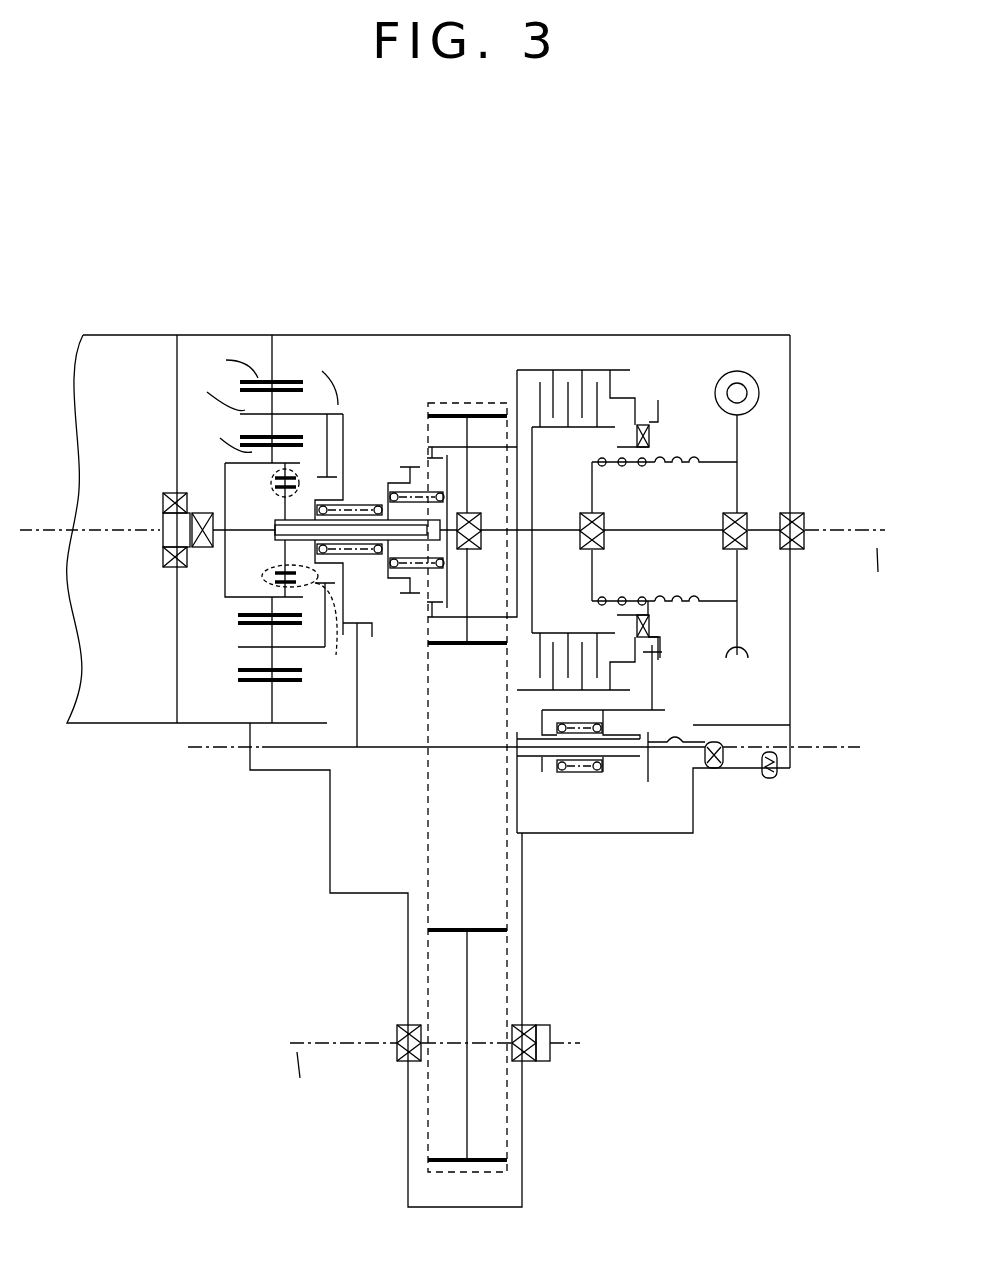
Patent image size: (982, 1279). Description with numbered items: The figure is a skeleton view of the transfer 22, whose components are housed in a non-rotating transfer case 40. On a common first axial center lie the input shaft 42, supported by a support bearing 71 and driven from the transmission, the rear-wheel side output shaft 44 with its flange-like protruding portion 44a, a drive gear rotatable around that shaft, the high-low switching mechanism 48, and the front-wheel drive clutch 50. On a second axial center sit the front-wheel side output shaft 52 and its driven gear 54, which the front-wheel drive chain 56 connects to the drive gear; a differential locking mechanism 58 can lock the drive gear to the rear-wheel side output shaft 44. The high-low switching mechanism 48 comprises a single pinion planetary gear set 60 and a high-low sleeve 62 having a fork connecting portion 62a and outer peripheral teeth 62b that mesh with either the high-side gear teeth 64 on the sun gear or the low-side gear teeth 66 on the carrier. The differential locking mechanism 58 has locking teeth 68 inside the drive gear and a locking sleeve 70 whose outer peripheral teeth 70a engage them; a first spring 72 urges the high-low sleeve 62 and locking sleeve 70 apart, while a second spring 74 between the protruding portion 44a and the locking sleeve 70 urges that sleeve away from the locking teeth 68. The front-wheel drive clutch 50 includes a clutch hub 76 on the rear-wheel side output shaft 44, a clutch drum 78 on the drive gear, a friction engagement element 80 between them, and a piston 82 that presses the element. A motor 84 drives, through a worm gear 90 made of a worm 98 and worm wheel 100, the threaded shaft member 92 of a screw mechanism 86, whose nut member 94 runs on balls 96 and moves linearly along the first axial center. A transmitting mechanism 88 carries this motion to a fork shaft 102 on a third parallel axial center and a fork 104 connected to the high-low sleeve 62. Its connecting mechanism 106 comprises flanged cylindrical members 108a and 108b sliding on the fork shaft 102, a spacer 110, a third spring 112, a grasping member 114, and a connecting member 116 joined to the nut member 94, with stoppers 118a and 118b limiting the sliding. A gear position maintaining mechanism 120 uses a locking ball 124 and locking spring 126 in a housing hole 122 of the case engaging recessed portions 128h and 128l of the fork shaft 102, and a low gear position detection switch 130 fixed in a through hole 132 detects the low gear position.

The transfer 22 is at (724, 196).
The transfer case 40 is at (190, 335).
The input shaft 42 is at (120, 530).
The rear-wheel side output shaft 44 is at (812, 530).
The protruding portion 44a is at (448, 462).
The high-low switching mechanism 48 is at (333, 264).
The front-wheel drive clutch 50 is at (568, 362).
The front-wheel side output shaft 52 is at (353, 1043).
The driven gear 54 is at (455, 932).
The front-wheel drive chain 56 is at (427, 1123).
The differential locking mechanism 58 is at (409, 412).
The planetary gear set 60 is at (272, 332).
The high-low sleeve 62 is at (346, 395).
The fork connecting portion 62a is at (338, 452).
The outer peripheral teeth 62b is at (277, 487).
The high-side gear teeth 64 is at (277, 469).
The low-side gear teeth 66 is at (331, 592).
The locking teeth 68 is at (432, 463).
The locking sleeve 70 is at (392, 483).
The outer peripheral teeth 70a is at (407, 462).
The support bearing 71 is at (163, 503).
The first spring 72 is at (378, 553).
The second spring 74 is at (440, 563).
The clutch hub 76 is at (574, 432).
The clutch drum 78 is at (578, 370).
The friction engagement element 80 is at (629, 384).
The piston 82 is at (636, 407).
The motor 84 is at (722, 378).
The screw mechanism 86 is at (697, 388).
The transmitting mechanism 88 is at (674, 814).
The worm gear 90 is at (774, 358).
The threaded shaft member 92 is at (672, 462).
The nut member 94 is at (648, 447).
The balls 96 is at (622, 466).
The worm 98 is at (745, 388).
The worm wheel 100 is at (737, 440).
The fork shaft 102 is at (385, 750).
The fork 104 is at (360, 672).
The connecting mechanism 106 is at (678, 666).
The flanged cylindrical member 108a is at (533, 757).
The flanged cylindrical member 108b is at (618, 760).
The spacer 110 is at (572, 753).
The third spring 112 is at (592, 767).
The grasping member 114 is at (567, 708).
The connecting member 116 is at (655, 686).
The stopper 118a is at (527, 757).
The stopper 118b is at (655, 742).
The gear position maintaining mechanism 120 is at (730, 825).
The housing hole 122 is at (718, 770).
The locking ball 124 is at (708, 750).
The locking spring 126 is at (712, 770).
The recessed portion 128h is at (702, 748).
The recessed portion 128l is at (667, 758).
The low gear position detection switch 130 is at (774, 795).
The through hole 132 is at (776, 781).